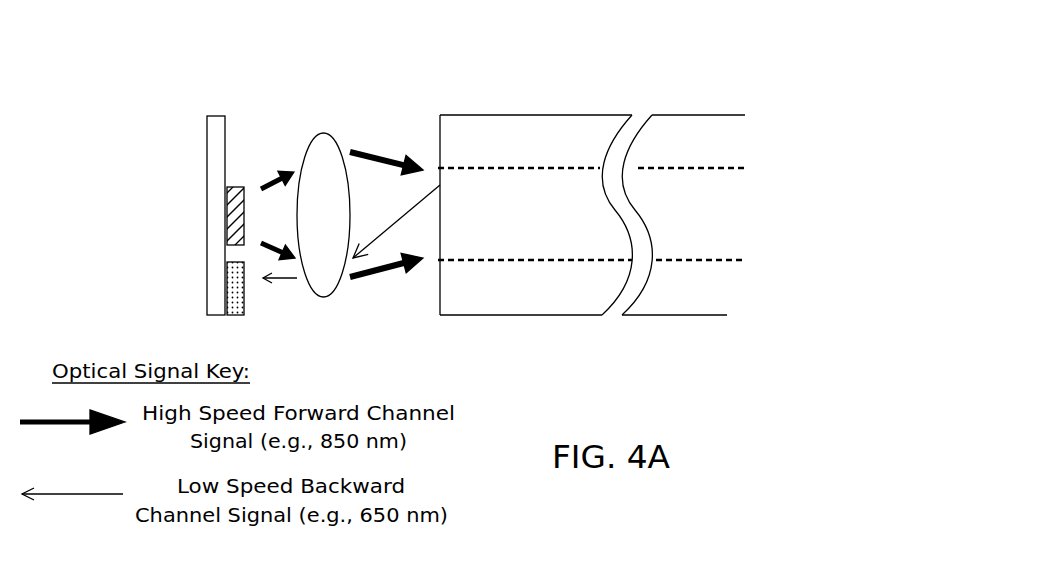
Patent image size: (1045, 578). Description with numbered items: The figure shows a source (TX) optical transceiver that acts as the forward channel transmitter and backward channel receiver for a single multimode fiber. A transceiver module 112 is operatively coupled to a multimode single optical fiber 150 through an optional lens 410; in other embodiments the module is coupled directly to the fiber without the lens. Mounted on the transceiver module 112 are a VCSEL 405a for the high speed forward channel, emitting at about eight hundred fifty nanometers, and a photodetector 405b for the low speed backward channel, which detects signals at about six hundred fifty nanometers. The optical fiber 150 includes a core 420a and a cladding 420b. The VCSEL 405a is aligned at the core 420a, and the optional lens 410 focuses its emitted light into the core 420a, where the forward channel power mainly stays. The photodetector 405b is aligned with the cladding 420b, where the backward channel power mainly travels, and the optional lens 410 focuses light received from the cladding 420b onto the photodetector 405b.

The transceiver module 112 is at (207, 142).
The VCSEL 405a is at (227, 227).
The photodetector 405b is at (227, 313).
The optional lens 410 is at (335, 134).
The multimode single optical fiber 150 is at (618, 175).
The core 420a is at (594, 214).
The cladding 420b is at (750, 310).